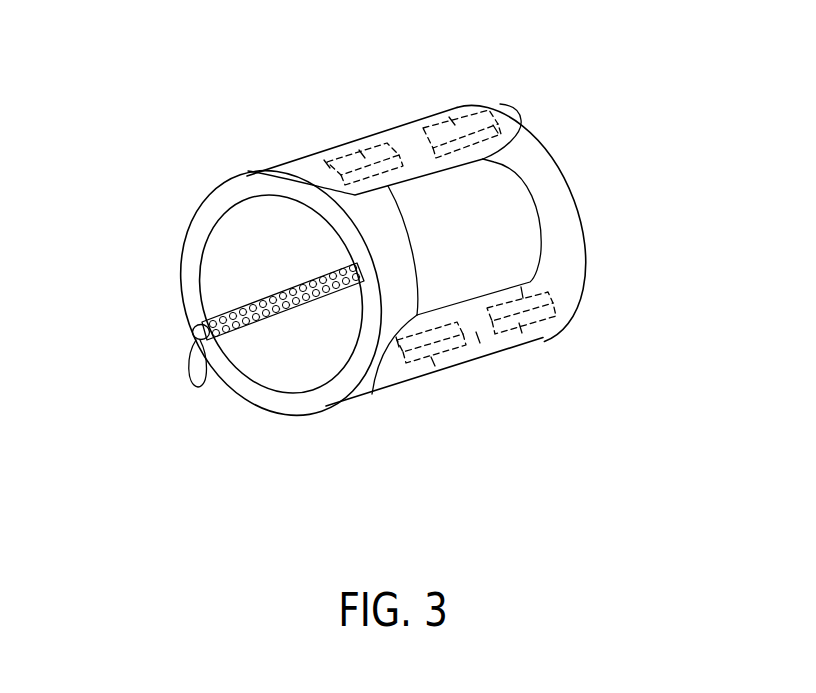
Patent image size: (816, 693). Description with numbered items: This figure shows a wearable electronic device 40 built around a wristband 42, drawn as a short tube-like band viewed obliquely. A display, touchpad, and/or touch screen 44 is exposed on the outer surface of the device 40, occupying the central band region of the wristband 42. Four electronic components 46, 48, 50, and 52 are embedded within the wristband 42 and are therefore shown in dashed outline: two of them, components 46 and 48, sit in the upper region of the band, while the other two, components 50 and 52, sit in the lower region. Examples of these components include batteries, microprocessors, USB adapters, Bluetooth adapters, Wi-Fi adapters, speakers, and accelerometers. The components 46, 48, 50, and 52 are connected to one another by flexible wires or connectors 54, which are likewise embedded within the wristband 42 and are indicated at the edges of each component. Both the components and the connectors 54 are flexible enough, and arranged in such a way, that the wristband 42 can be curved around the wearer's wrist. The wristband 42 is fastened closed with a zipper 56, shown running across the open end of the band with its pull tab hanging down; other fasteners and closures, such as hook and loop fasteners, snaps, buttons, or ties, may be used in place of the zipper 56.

The wearable electronic device 40 is at (143, 172).
The wristband 42 is at (373, 390).
The display, touchpad, and/or touch screen 44 is at (513, 215).
The component 46 is at (362, 157).
The component 48 is at (452, 122).
The component 50 is at (522, 332).
The component 52 is at (433, 363).
The flexible wires or connectors 54 is at (326, 164).
The zipper 56 is at (200, 333).